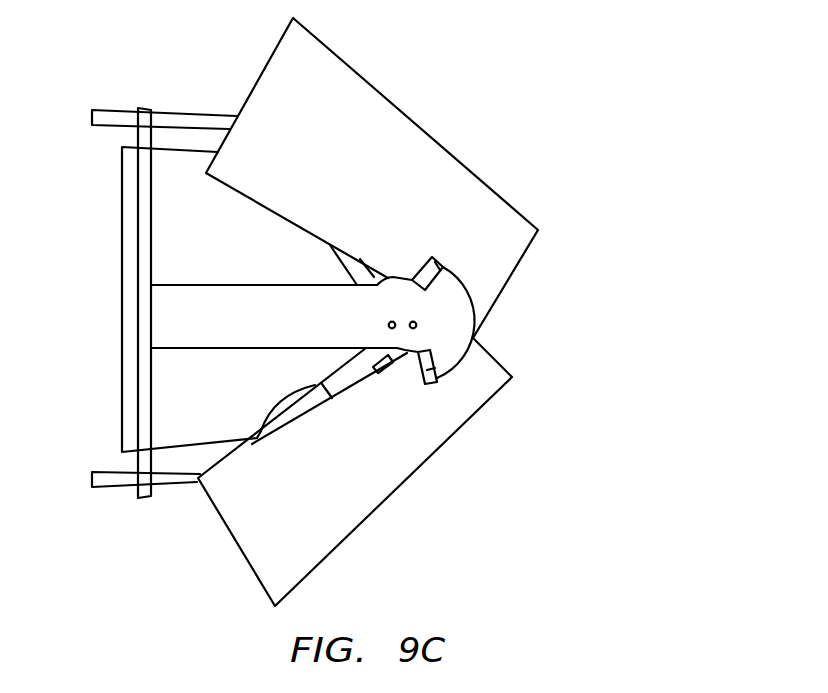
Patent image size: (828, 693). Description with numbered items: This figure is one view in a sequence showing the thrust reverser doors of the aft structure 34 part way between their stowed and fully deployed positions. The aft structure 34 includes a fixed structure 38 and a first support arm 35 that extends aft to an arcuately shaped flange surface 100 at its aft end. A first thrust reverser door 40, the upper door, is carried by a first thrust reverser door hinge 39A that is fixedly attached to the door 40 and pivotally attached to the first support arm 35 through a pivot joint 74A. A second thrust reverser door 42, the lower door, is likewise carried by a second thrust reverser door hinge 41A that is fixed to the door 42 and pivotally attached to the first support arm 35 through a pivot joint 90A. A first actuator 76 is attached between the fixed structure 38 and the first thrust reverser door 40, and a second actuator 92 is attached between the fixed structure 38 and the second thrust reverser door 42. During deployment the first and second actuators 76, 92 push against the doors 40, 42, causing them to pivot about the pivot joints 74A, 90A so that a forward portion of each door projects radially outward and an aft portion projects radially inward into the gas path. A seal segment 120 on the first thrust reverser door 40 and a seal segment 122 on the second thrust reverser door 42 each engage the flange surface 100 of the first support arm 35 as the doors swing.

The aft structure 34 is at (613, 108).
The first support arm 35 is at (168, 323).
The fixed structure 38 is at (168, 407).
The first thrust reverser door hinge 39A is at (352, 268).
The first thrust reverser door 40 is at (376, 91).
The second thrust reverser door hinge 41A is at (340, 385).
The second thrust reverser door 42 is at (417, 473).
The pivot joint 74A is at (388, 326).
The first actuator 76 is at (108, 112).
The pivot joint 90A is at (414, 331).
The second actuator 92 is at (110, 483).
The arcuately shaped flange surface 100 is at (460, 315).
The seal segment 120 is at (434, 258).
The seal segment 122 is at (457, 368).